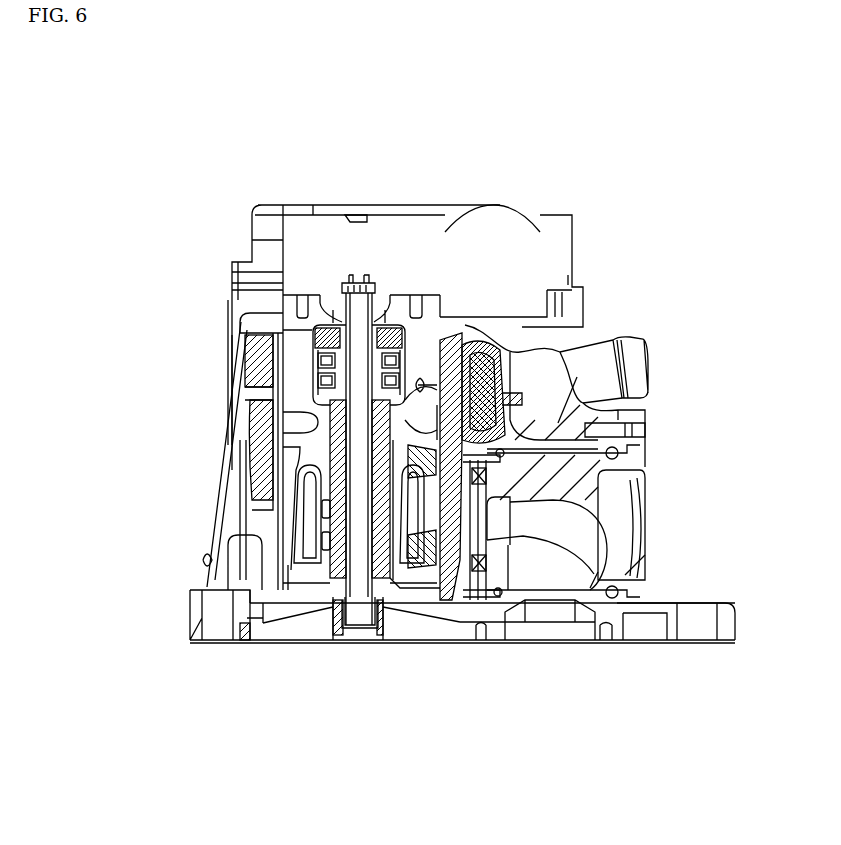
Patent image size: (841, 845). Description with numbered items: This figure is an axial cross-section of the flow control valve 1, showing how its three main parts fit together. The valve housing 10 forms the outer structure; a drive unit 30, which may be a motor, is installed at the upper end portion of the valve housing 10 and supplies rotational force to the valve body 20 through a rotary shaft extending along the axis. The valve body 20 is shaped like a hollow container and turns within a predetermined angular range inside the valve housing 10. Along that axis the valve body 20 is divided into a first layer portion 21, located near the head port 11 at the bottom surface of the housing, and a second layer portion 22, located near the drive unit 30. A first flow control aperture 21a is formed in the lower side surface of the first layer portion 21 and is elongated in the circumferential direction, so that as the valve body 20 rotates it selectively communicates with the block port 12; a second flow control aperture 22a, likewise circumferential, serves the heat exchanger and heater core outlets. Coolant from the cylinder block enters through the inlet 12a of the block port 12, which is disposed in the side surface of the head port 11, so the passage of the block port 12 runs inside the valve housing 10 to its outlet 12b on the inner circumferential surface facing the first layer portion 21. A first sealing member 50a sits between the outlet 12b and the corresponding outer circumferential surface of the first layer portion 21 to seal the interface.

The flow control valve 1 is at (380, 172).
The valve housing 10 is at (228, 298).
The head port 11 is at (421, 652).
The block port 12 is at (555, 652).
The inlet of the block port 12a is at (575, 632).
The outlet of the block port 12b is at (523, 528).
The valve body 20 is at (252, 368).
The first layer portion 21 is at (149, 474).
The first flow control aperture 21a is at (233, 643).
The second layer portion 22 is at (149, 332).
The second flow control aperture 22a is at (248, 390).
The drive unit 30 is at (511, 240).
The first sealing member 50a is at (483, 602).